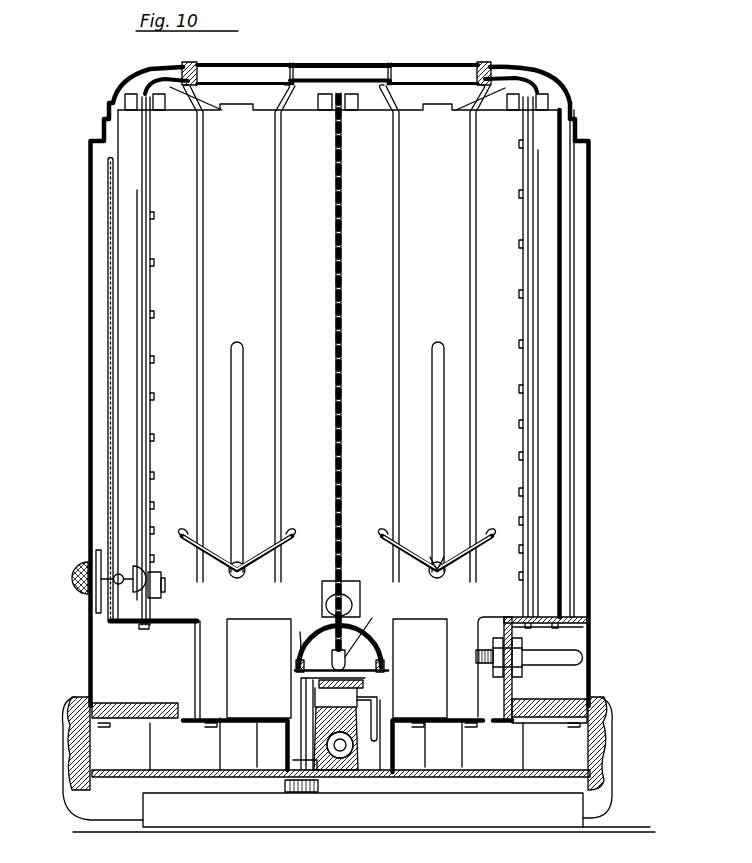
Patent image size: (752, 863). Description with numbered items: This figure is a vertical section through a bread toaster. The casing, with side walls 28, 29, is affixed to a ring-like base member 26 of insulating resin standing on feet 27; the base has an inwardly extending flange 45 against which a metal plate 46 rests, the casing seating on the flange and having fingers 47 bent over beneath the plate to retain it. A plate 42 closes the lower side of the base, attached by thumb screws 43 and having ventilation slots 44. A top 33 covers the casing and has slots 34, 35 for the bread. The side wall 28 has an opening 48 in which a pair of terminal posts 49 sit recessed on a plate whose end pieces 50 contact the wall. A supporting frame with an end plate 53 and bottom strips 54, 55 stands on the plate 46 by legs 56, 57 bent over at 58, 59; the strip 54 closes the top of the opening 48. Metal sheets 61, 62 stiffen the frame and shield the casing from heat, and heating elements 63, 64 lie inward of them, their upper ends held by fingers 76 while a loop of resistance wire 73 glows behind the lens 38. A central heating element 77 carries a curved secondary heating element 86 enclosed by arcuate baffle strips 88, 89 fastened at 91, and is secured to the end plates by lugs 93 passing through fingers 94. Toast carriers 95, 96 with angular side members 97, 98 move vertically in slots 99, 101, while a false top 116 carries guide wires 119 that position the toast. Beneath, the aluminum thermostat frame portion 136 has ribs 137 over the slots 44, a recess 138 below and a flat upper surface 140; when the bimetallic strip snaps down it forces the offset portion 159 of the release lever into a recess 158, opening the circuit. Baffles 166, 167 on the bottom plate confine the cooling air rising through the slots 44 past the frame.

The base member 26 is at (612, 725).
The feet 27 is at (364, 812).
The side wall 28 is at (592, 305).
The side wall 29 is at (88, 315).
The top 33 is at (513, 72).
The slot 34 is at (472, 73).
The slot 35 is at (282, 72).
The lens 38 is at (68, 585).
The plate 42 is at (500, 773).
The thumb screws 43 is at (300, 794).
The slots 44 is at (330, 770).
The flange 45 is at (576, 698).
The metal plate 46 is at (578, 724).
The fingers 47 is at (129, 746).
The opening 48 is at (572, 624).
The terminal posts 49 is at (585, 658).
The end pieces 50 is at (565, 641).
The end plate 53 is at (435, 333).
The bottom strip 54 is at (574, 615).
The bottom strip 55 is at (129, 627).
The leg 56 is at (213, 672).
The leg 57 is at (477, 667).
The bent-over leg end 58 is at (466, 728).
The bent-over leg end 59 is at (513, 701).
The metal sheet 61 is at (562, 232).
The metal sheet 62 is at (112, 250).
The heating element 63 is at (528, 165).
The heating element 64 is at (144, 238).
The loop of resistance wire 73 is at (72, 566).
The fingers 76 is at (540, 94).
The central heating element 77 is at (342, 128).
The secondary heating element 86 is at (374, 620).
The baffle strip 88 is at (313, 634).
The baffle strip 89 is at (370, 633).
The fastening 91 is at (362, 583).
The lugs 93 is at (380, 676).
The fingers 94 is at (390, 639).
The toast carrier 95 is at (443, 566).
The toast carrier 96 is at (247, 555).
The side member 97 is at (284, 551).
The side member 98 is at (195, 545).
The slot 99 is at (236, 343).
The slot 101 is at (438, 343).
The false top 116 is at (372, 80).
The guide wires 119 is at (275, 166).
The intermediate portion 136 is at (322, 703).
The ribs 137 is at (368, 760).
The recess 138 is at (352, 752).
The flat upper surface 140 is at (322, 703).
The recess 158 is at (380, 711).
The offset portion 159 is at (377, 695).
The baffle 166 is at (252, 727).
The baffle 167 is at (432, 726).